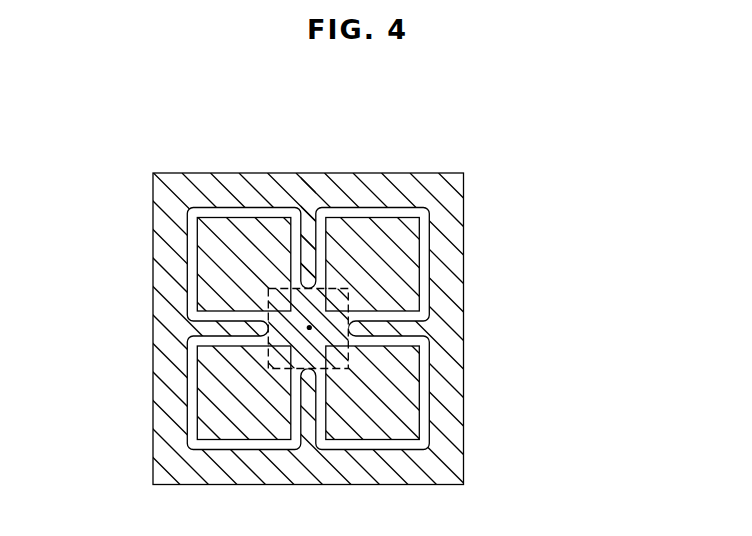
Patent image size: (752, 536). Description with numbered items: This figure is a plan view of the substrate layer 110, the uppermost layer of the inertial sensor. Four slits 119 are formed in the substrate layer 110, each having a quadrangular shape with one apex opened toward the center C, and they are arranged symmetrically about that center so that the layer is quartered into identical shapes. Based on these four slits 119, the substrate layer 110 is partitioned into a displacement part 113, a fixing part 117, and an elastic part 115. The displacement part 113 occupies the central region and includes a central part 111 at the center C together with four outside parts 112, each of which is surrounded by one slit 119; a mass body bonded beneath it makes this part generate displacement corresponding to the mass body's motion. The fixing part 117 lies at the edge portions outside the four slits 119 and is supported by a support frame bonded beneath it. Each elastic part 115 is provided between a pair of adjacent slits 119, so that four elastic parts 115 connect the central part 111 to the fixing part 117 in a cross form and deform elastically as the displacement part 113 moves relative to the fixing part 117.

The substrate layer 110 is at (125, 130).
The central part 111 is at (332, 338).
The outside part 112 is at (398, 284).
The displacement part 113 is at (425, 329).
The elastic part 115 is at (309, 213).
The fixing part 117 is at (447, 250).
The slit 119 is at (423, 415).